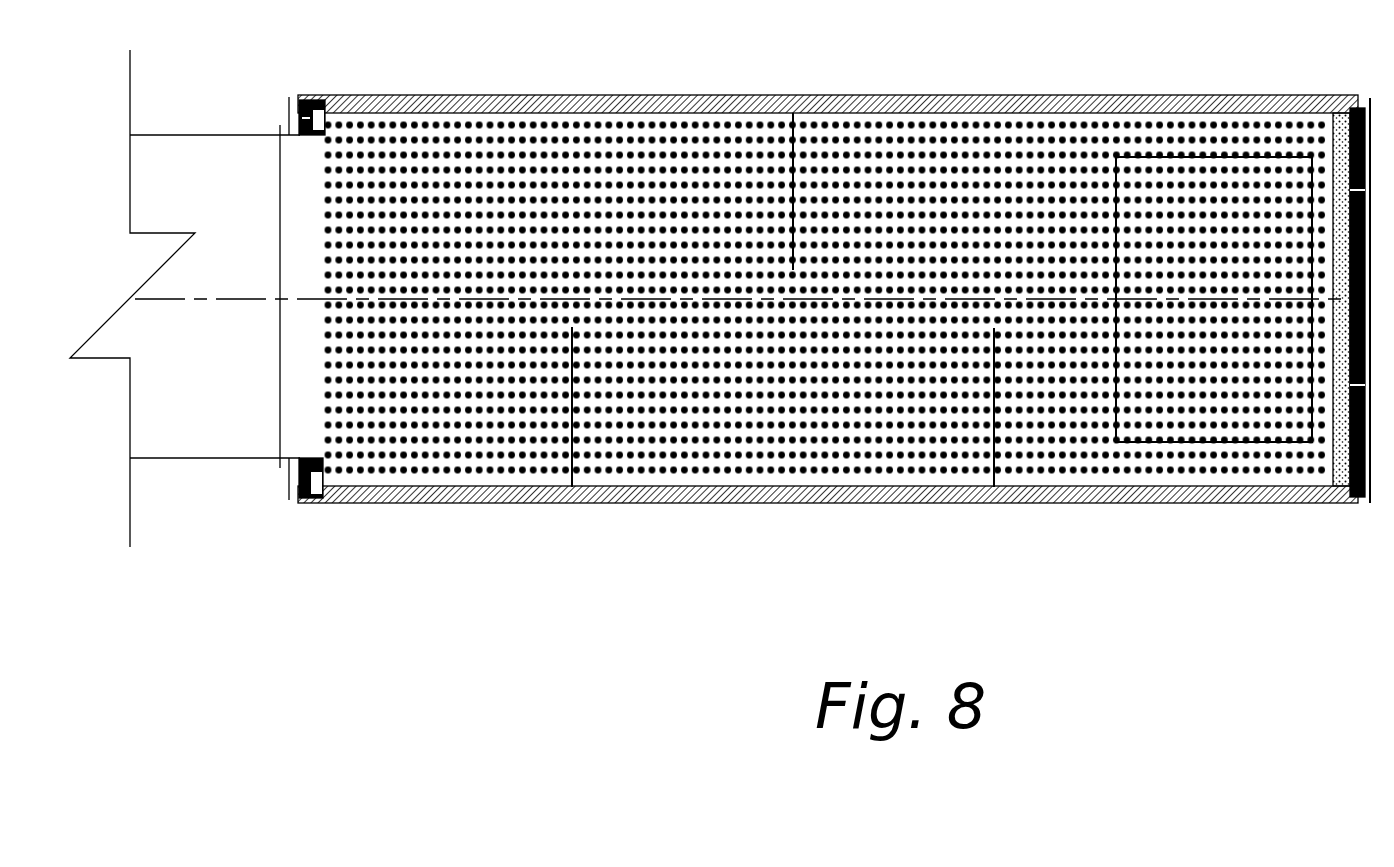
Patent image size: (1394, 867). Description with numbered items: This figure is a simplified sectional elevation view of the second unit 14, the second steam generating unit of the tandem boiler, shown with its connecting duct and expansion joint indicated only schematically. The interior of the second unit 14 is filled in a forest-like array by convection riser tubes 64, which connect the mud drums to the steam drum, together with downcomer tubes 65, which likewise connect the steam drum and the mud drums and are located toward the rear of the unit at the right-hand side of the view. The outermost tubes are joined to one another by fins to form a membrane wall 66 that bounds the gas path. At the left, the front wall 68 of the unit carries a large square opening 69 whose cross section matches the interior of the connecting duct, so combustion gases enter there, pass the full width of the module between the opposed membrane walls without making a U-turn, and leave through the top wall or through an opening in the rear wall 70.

The second unit 14 is at (508, 603).
The convection riser tubes 64 is at (777, 122).
The membrane wall 66 is at (639, 111).
The downcomer tubes 65 is at (1275, 493).
The square opening 69 is at (307, 143).
The front wall 68 is at (287, 476).
The rear wall 70 is at (1346, 470).